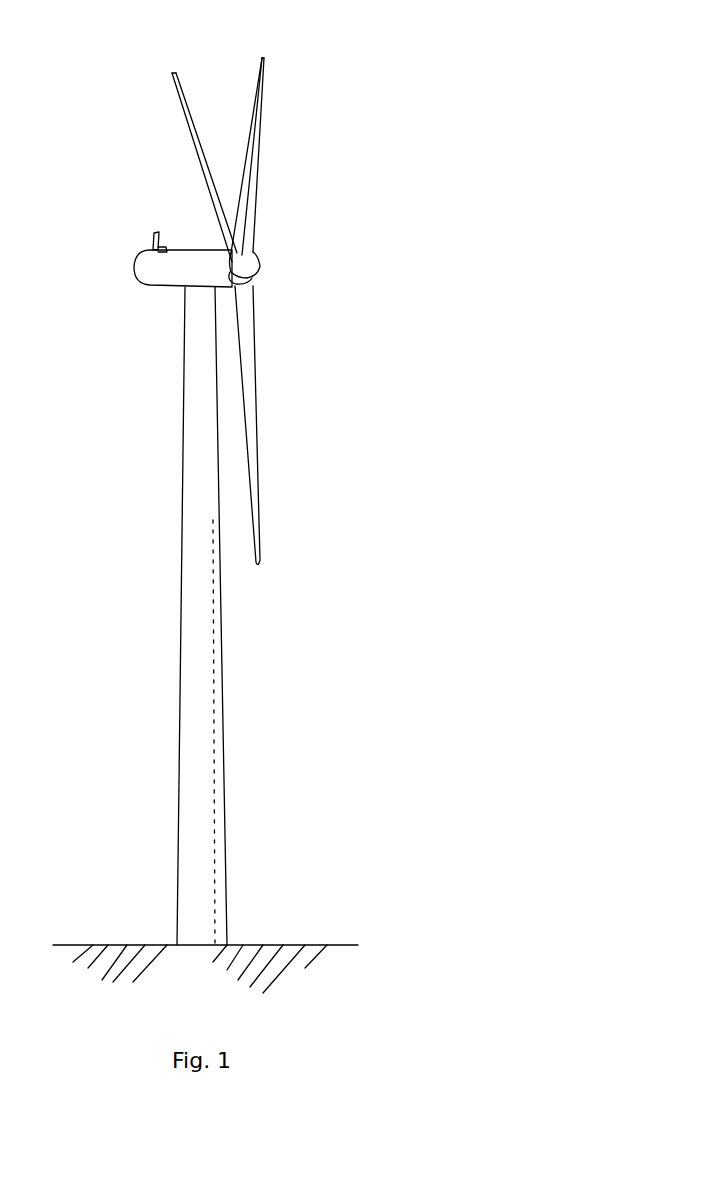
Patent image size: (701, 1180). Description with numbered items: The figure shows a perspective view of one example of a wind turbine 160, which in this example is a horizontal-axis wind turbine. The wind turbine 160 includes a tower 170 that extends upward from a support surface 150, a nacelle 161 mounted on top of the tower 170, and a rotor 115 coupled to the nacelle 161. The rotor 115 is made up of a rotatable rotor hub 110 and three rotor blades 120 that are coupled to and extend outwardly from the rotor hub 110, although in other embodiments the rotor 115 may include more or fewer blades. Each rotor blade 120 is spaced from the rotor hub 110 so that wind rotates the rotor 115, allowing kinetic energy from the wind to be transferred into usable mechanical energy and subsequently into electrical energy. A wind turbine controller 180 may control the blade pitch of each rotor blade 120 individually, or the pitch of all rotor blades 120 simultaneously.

The rotor hub 110 is at (262, 271).
The rotor 115 is at (265, 247).
The rotor blade 120 is at (257, 92).
The support surface 150 is at (118, 945).
The wind turbine 160 is at (357, 121).
The nacelle 161 is at (167, 290).
The tower 170 is at (188, 707).
The wind turbine controller 180 is at (188, 275).